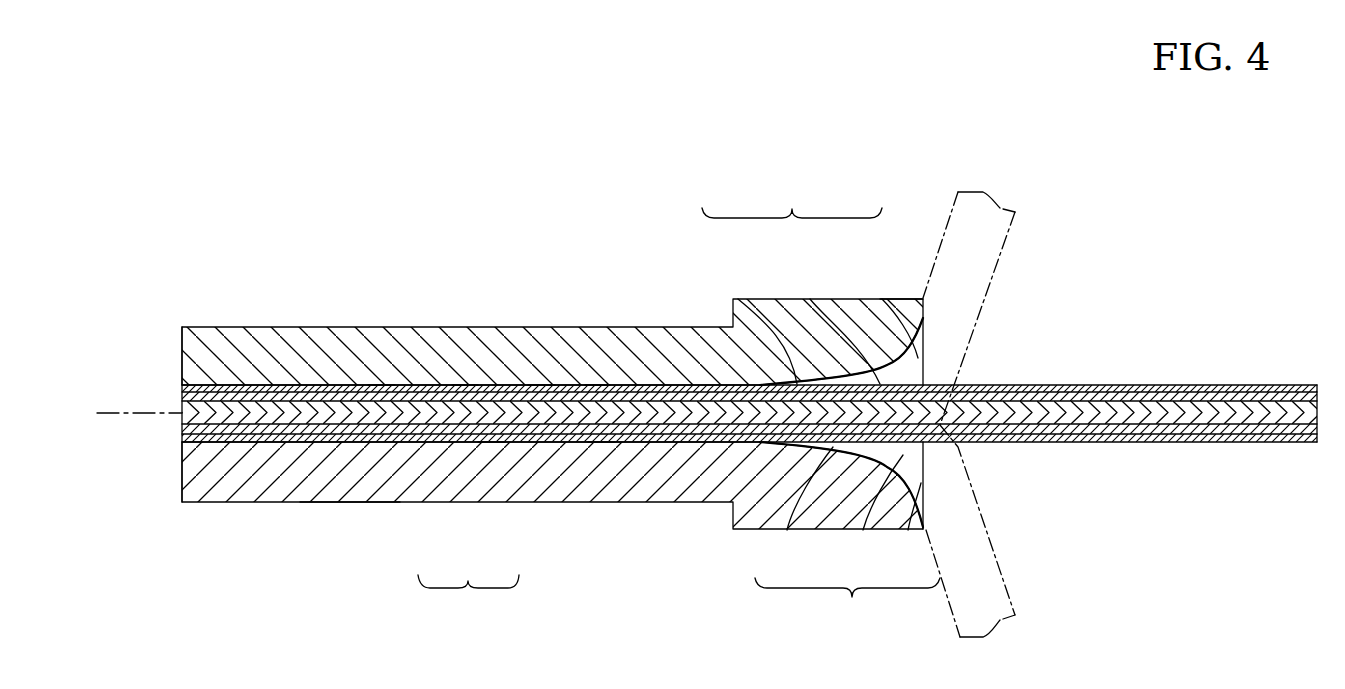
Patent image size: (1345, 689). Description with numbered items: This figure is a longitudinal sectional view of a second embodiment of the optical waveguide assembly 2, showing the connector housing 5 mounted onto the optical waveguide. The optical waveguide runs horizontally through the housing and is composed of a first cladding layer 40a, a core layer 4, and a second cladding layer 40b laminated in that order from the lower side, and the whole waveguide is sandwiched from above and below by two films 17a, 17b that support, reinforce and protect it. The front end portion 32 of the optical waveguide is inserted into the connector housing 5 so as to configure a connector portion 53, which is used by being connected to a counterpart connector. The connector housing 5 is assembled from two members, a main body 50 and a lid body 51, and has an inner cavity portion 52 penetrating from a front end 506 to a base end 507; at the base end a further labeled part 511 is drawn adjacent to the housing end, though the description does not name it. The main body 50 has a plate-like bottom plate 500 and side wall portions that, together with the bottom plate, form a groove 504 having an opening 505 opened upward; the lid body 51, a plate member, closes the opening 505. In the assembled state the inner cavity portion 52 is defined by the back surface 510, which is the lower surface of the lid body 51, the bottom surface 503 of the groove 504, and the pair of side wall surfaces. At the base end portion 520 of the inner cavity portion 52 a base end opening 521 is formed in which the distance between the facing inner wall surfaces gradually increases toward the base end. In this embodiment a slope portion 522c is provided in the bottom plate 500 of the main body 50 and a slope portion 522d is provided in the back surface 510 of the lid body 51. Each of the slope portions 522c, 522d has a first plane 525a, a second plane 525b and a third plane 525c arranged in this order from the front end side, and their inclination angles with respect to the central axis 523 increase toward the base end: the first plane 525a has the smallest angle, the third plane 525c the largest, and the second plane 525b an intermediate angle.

The optical waveguide assembly 2 is at (749, 357).
The core layer 4 is at (1293, 408).
The connector housing 5 is at (892, 266).
The film 17a is at (1110, 385).
The film 17b is at (1113, 442).
The front end portion 32 is at (490, 442).
The first cladding layer 40a is at (1252, 432).
The second cladding layer 40b is at (1237, 395).
The main body 50 is at (243, 502).
The lid body 51 is at (258, 327).
The inner cavity portion 52 is at (597, 383).
The connector portion 53 is at (468, 598).
The bottom plate 500 is at (338, 473).
The bottom surface 503 is at (600, 442).
The groove 504 is at (382, 385).
The opening 505 is at (465, 385).
The front end 506 is at (182, 360).
The base end 507 is at (925, 301).
The back surface 510 is at (541, 385).
The flange end face 511 is at (922, 298).
The base end portion 520 is at (913, 373).
The base end opening 521 is at (913, 458).
The slope portion 522c is at (847, 601).
The slope portion 522d is at (818, 384).
The central axis 523 is at (117, 412).
The first plane 525a is at (738, 299).
The second plane 525b is at (810, 299).
The third plane 525c is at (882, 299).